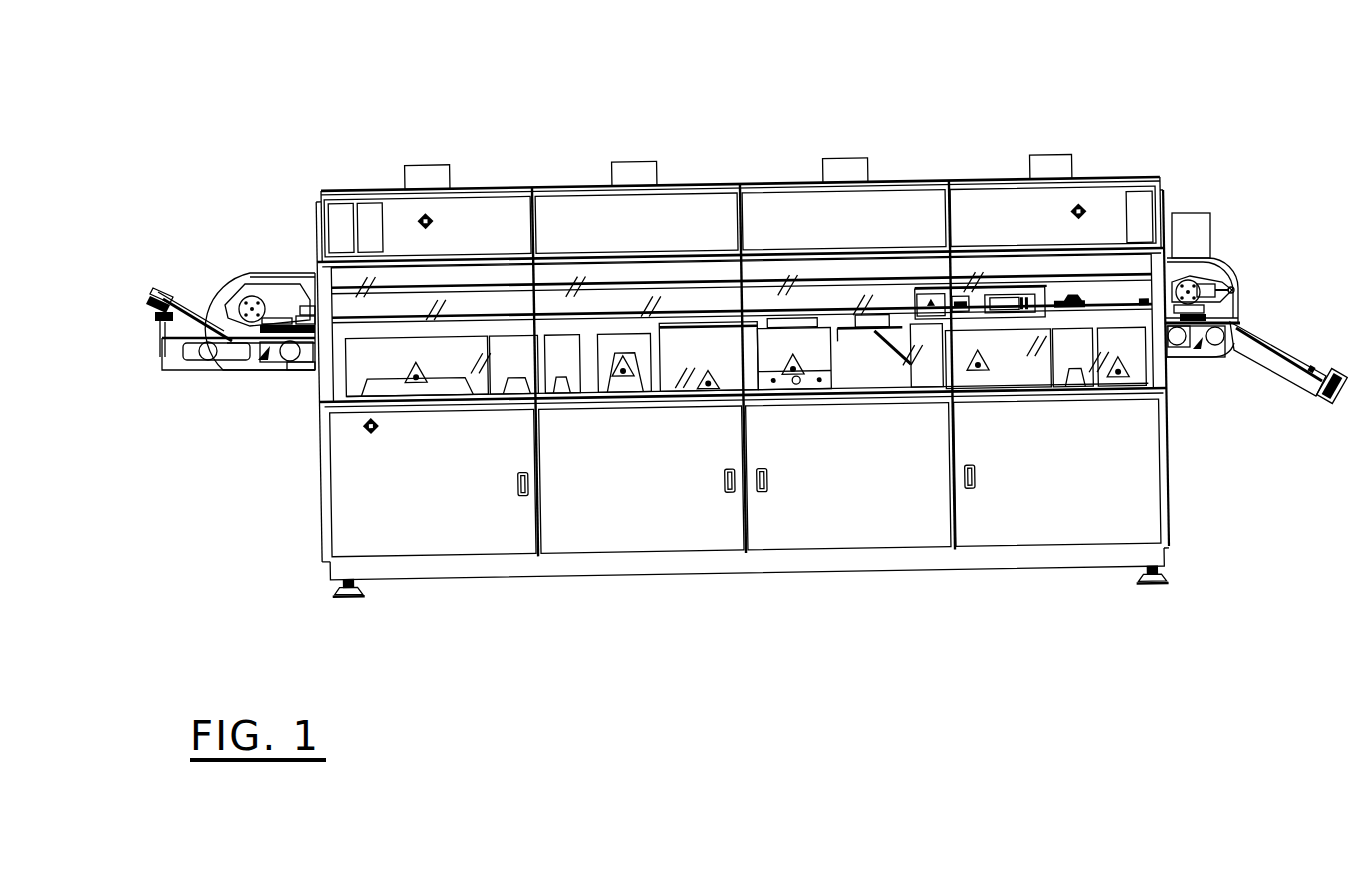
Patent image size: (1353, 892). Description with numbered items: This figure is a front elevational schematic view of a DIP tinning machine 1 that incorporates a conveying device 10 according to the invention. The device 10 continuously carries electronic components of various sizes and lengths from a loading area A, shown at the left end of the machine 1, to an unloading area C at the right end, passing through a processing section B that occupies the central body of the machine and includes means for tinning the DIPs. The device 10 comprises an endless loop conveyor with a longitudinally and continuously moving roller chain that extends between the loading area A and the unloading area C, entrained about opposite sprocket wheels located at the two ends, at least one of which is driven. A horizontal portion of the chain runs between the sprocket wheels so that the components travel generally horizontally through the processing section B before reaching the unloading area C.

The machine 1 is at (460, 130).
The device 10 is at (270, 280).
The loading area A is at (199, 209).
The processing section B is at (675, 131).
The unloading area C is at (1231, 207).